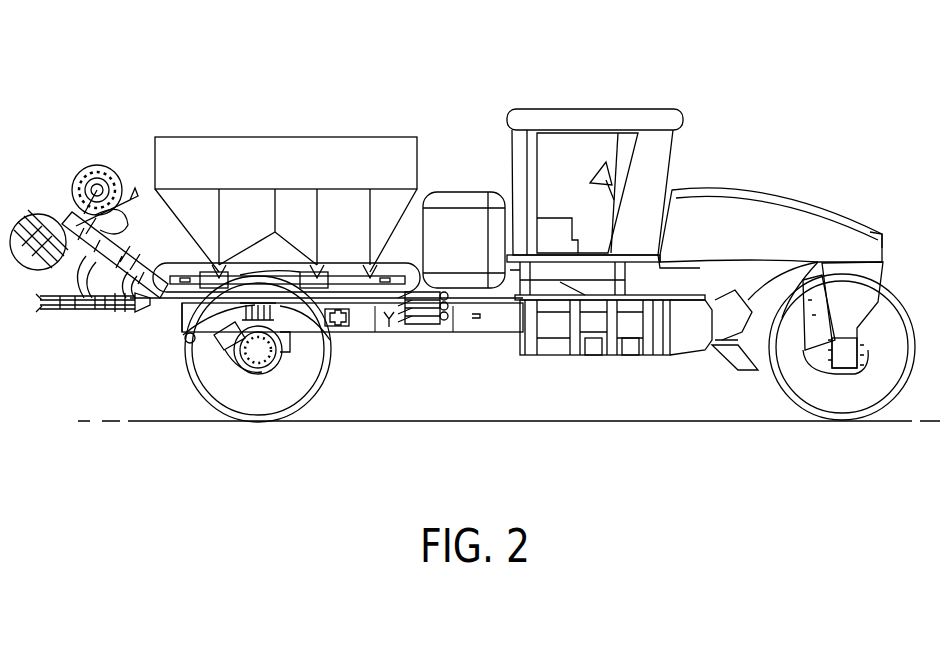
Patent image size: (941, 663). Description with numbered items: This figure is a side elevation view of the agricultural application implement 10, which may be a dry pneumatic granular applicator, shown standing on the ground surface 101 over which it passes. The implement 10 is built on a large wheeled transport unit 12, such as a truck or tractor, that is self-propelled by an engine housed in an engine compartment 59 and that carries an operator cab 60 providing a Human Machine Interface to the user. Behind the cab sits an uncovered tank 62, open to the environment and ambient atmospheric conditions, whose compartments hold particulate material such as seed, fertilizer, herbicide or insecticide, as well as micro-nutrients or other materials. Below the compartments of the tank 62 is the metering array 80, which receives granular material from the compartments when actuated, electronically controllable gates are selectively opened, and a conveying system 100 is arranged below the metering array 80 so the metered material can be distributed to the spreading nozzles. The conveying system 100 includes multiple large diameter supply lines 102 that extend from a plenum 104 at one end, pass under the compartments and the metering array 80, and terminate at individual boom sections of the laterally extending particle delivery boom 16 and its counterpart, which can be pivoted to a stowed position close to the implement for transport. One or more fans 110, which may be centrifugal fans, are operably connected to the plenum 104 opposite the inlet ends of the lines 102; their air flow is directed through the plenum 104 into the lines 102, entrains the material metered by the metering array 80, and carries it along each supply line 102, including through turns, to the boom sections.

The agricultural application implement 10 is at (580, 402).
The wheeled transport unit 12 is at (696, 180).
The particle delivery boom 16 is at (445, 340).
The engine compartment 59 is at (798, 198).
The operator cab 60 is at (597, 109).
The tank 62 is at (257, 119).
The metering array 80 is at (325, 343).
The conveying system 100 is at (188, 333).
The ground surface 101 is at (768, 421).
The large diameter supply line 102 is at (142, 270).
The plenum 104 is at (93, 264).
The fan 110 is at (68, 188).